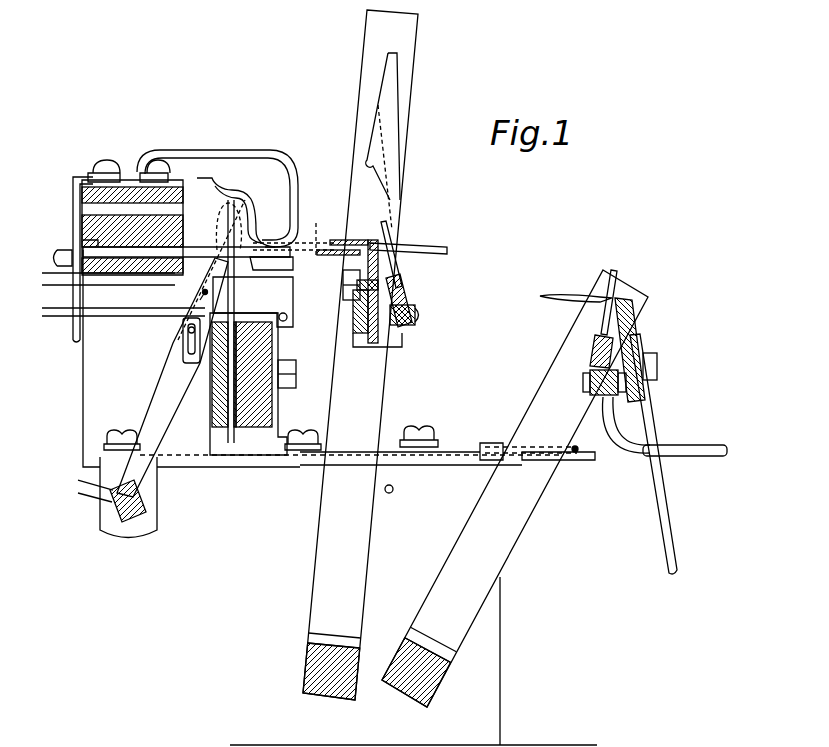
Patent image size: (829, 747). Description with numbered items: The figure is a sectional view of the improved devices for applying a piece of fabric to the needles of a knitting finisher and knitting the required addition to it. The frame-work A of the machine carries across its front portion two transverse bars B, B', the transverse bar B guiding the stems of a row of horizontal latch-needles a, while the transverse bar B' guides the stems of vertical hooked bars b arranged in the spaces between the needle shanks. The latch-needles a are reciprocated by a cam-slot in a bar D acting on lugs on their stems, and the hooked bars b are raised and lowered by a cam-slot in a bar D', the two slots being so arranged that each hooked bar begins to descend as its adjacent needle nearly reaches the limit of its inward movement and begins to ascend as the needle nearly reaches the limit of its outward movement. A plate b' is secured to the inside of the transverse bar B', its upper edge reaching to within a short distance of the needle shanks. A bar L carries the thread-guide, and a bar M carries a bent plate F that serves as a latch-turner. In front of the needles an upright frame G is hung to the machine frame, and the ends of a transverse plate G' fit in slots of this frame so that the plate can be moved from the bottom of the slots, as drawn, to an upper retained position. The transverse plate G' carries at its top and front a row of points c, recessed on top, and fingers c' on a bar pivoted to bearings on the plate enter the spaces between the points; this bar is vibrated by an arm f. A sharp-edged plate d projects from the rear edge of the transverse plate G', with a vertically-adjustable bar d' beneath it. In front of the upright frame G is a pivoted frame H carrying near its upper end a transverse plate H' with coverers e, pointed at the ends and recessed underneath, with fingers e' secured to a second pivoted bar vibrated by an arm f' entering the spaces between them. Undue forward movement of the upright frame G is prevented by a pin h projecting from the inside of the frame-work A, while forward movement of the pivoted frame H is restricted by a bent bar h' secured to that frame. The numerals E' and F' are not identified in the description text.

The frame-work A is at (319, 497).
The bar L is at (87, 243).
The bar M is at (160, 190).
The bar D is at (132, 217).
The transverse bar B is at (132, 270).
The latch-needles a is at (209, 246).
The bracket E' is at (231, 198).
The hook F' is at (236, 212).
The plate b' is at (211, 270).
The bent plate F is at (169, 390).
The hooked bars b is at (195, 327).
The bar D' is at (253, 384).
The transverse bar B' is at (223, 374).
The upright frame G is at (363, 355).
The arm f is at (394, 141).
The fingers c' is at (399, 249).
The points c is at (415, 249).
The sharp-edged plate d is at (349, 232).
The vertically-adjustable bar d' is at (338, 264).
The transverse plate G' is at (372, 306).
The pin h is at (396, 490).
The bent bar h' is at (539, 441).
The pivoted frame H is at (515, 488).
The transverse plate H' is at (643, 350).
The fingers e' is at (615, 291).
The coverers e is at (576, 288).
The arm f' is at (665, 426).